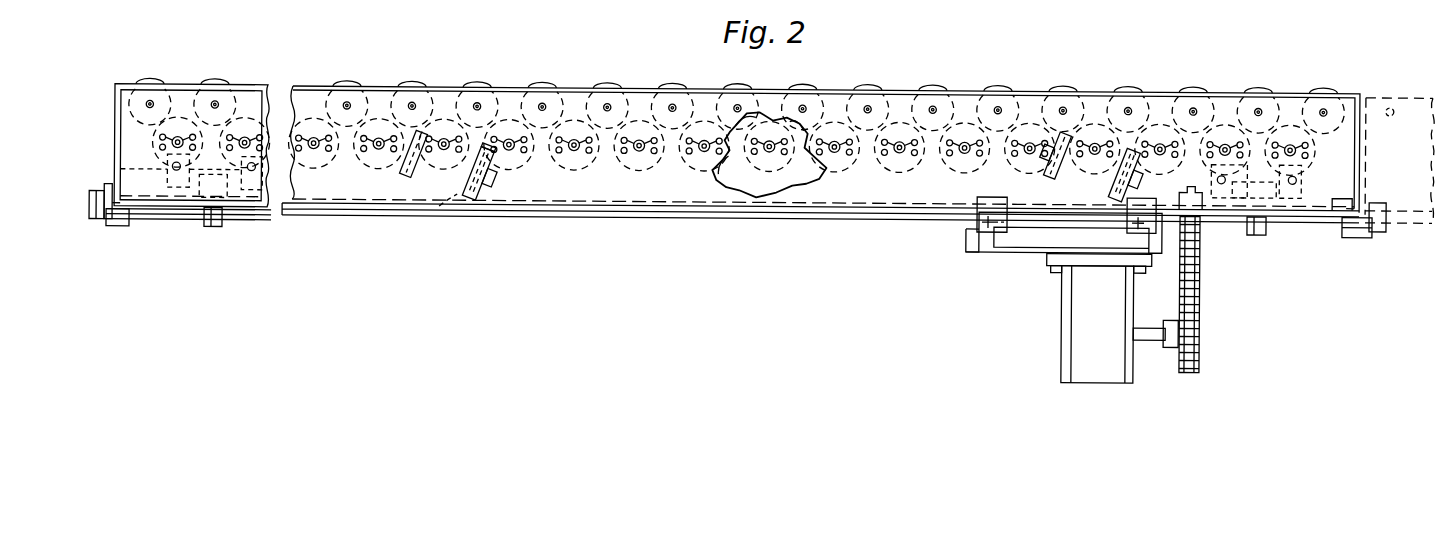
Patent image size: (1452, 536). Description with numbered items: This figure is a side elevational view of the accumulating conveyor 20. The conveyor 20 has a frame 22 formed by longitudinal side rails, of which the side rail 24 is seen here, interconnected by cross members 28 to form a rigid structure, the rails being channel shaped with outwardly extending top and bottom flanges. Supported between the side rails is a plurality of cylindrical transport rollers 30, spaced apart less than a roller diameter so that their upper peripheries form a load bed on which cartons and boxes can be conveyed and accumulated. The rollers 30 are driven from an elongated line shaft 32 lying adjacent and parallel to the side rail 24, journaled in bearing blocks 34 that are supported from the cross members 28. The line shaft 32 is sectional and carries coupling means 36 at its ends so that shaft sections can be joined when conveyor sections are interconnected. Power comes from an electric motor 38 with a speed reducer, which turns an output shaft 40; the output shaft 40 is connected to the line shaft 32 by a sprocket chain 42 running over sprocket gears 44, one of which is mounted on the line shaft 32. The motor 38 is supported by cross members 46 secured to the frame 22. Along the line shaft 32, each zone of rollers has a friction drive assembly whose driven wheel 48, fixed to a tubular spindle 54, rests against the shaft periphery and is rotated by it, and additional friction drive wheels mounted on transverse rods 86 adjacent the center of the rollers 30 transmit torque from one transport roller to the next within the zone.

The conveyor 20 is at (1040, 66).
The frame 22 is at (670, 212).
The side rail 24 is at (1296, 86).
The cross members 28 is at (253, 195).
The transport rollers 30 is at (600, 82).
The line shaft 32 is at (818, 216).
The bearing blocks 34 is at (213, 228).
The coupling means 36 is at (118, 227).
The electric motor 38 is at (1090, 316).
The output shaft 40 is at (1152, 335).
The sprocket chain 42 is at (1204, 291).
The sprocket gears 44 is at (1172, 342).
The cross members 46 is at (968, 246).
The driven wheel 48 is at (485, 205).
The tubular spindle 54 is at (440, 205).
The transverse rods 86 is at (1196, 98).